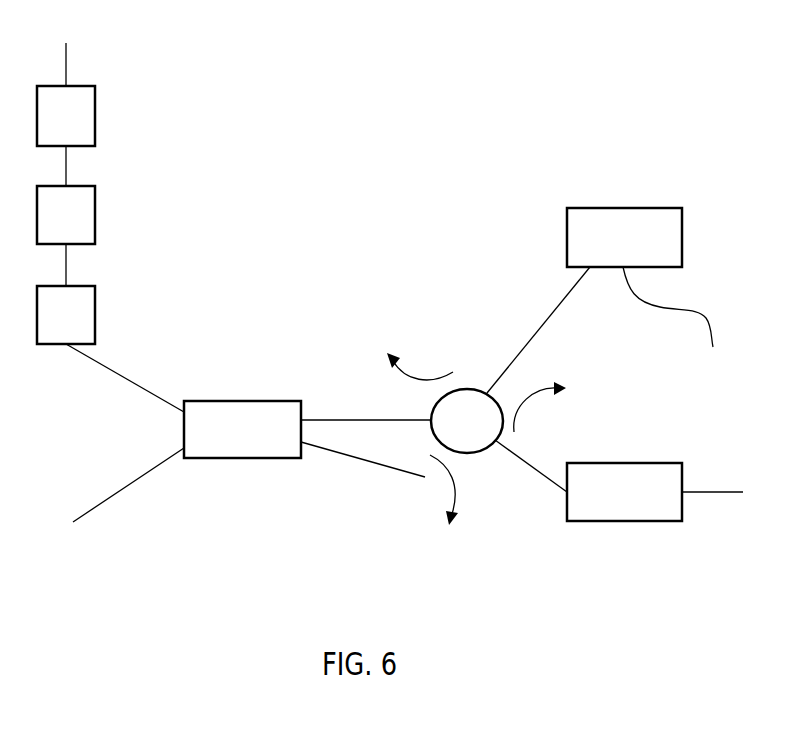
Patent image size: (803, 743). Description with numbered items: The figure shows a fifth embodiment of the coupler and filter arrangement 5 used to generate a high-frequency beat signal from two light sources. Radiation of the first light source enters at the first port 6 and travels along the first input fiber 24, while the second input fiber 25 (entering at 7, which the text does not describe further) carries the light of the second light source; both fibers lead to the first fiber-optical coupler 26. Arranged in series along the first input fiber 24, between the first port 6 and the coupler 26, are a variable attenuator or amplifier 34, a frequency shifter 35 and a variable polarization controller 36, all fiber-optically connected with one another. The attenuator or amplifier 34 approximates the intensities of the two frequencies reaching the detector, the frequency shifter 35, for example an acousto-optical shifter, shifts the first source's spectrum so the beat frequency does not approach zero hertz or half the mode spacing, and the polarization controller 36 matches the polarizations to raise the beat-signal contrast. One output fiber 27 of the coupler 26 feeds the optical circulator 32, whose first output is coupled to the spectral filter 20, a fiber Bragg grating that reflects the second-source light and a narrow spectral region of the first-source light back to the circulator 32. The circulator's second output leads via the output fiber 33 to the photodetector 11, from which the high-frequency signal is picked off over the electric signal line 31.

The coupler and filter arrangement 5 is at (250, 98).
The first port 6 is at (76, 42).
The network connection 7 is at (84, 532).
The photodetector 11 is at (638, 250).
The spectral filter 20 is at (638, 505).
The first input fiber 24 is at (68, 62).
The second input fiber 25 is at (138, 478).
The first fiber-optical coupler 26 is at (256, 443).
The output fiber 27 is at (333, 418).
The signal line 31 is at (707, 318).
The optical circulator 32 is at (481, 434).
The output fiber 33 is at (545, 322).
The variable attenuator or amplifier 34 is at (80, 129).
The frequency shifter 35 is at (80, 228).
The variable polarization controller 36 is at (80, 328).